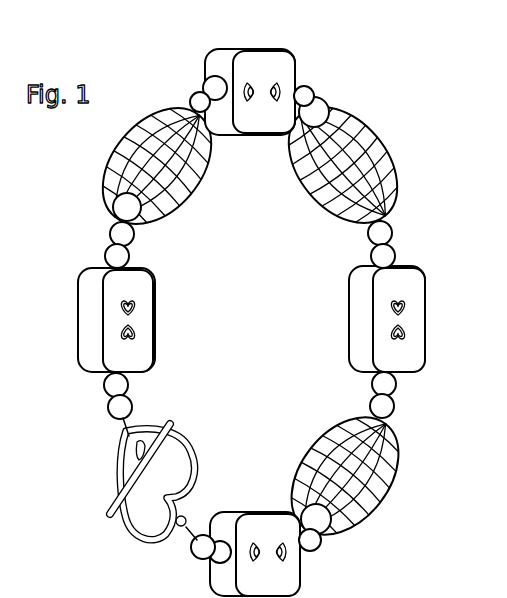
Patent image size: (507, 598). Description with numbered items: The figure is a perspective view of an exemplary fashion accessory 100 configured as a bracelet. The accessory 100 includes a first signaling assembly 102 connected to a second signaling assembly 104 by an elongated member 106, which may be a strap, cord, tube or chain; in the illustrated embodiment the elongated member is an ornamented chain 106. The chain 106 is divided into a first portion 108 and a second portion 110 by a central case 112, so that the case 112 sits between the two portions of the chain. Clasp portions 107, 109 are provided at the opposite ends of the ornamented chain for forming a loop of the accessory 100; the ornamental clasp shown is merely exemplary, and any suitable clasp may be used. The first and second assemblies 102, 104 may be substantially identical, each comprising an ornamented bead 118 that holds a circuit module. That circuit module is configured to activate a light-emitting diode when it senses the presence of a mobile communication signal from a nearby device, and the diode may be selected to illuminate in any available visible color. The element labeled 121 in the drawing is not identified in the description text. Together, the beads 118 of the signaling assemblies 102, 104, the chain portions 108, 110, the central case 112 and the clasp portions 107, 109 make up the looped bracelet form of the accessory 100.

The fashion accessory 100 is at (72, 414).
The first signaling assembly 102 is at (214, 184).
The second signaling assembly 104 is at (306, 441).
The elongated member 106 is at (314, 79).
The clasp portion 107 is at (200, 462).
The first portion 108 is at (417, 315).
The clasp portion 109 is at (172, 420).
The second portion 110 is at (262, 58).
The central case 112 is at (388, 160).
The ornamented bead 118 is at (125, 170).
The string 121 is at (47, 597).